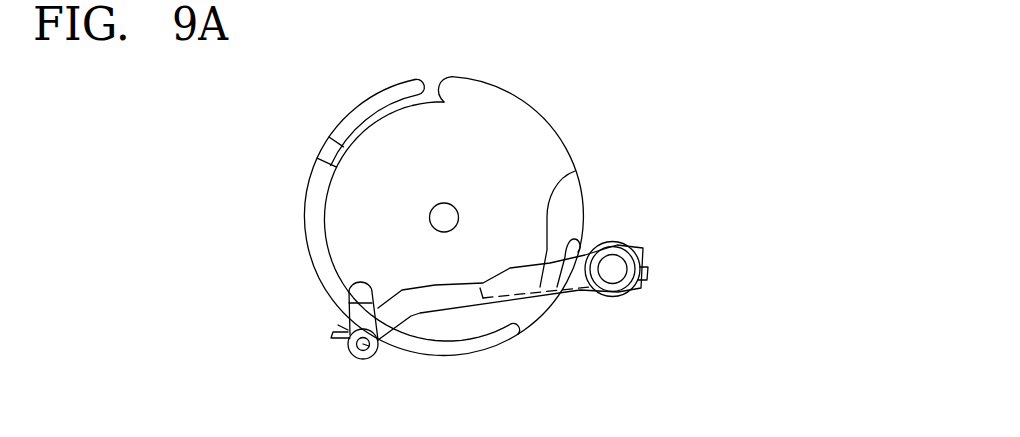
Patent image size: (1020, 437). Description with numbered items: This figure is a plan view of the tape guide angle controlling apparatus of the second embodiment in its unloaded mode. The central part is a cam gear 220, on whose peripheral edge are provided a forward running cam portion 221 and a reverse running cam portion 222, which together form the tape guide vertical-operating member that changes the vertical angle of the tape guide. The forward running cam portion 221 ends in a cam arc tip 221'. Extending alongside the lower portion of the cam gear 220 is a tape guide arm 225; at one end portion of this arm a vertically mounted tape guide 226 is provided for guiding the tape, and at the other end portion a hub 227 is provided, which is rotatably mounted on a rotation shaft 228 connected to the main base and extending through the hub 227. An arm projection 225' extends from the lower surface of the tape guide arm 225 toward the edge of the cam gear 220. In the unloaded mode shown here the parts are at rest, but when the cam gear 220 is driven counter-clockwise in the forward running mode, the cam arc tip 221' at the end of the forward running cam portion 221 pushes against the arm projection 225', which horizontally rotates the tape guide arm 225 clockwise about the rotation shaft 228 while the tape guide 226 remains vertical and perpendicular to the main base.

The cam gear 220 is at (547, 138).
The forward running cam portion 221 is at (373, 221).
The cam arc tip 221' is at (588, 344).
The reverse running cam portion 222 is at (346, 124).
The tape guide arm 225 is at (510, 330).
The arm projection 225' is at (591, 221).
The tape guide 226 is at (350, 350).
The hub 227 is at (615, 244).
The rotation shaft 228 is at (617, 273).